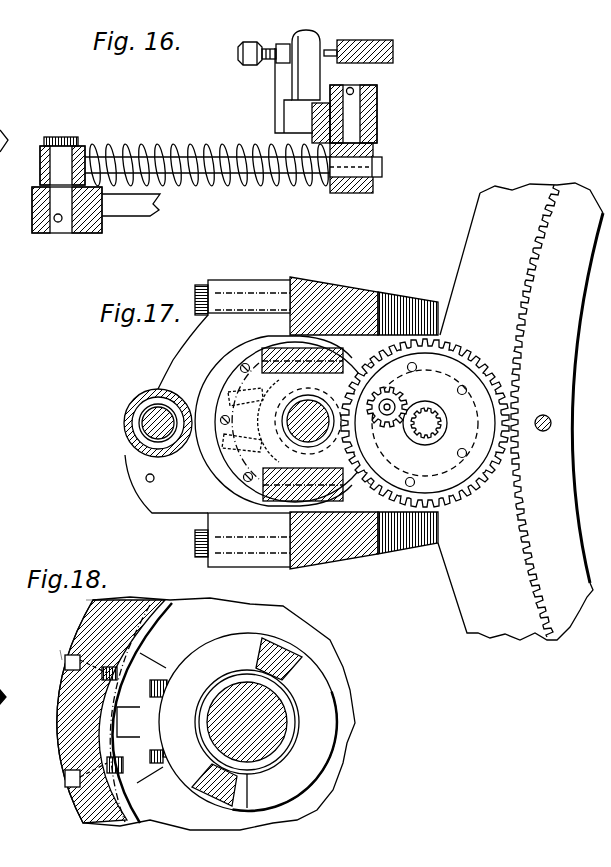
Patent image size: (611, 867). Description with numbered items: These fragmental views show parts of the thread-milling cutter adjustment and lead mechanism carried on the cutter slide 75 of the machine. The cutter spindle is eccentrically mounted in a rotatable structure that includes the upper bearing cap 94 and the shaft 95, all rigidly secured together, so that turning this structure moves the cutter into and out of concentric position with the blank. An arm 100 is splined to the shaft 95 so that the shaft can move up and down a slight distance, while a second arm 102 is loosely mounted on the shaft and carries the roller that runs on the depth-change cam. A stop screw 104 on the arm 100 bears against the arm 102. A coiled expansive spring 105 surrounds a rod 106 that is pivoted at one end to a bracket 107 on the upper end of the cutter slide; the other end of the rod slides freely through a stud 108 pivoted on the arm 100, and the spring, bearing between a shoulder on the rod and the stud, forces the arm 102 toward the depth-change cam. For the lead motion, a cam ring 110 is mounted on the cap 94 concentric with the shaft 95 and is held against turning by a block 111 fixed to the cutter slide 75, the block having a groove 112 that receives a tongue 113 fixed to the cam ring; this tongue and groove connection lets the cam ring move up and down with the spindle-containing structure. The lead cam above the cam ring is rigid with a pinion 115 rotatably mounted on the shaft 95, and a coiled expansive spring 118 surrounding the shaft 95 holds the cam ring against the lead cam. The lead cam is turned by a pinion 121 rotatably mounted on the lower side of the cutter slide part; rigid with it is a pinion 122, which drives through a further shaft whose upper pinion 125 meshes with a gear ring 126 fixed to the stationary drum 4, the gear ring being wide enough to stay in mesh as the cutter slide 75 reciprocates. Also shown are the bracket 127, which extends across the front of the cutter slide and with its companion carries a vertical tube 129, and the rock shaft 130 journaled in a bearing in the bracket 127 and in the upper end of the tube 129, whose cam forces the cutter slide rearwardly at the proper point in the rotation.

In FIG. 17, the circular frame member or drum 4 is at (519, 411).
In FIG. 18, the cutter slide 75 is at (63, 737).
In FIG. 18, the upper bearing cap 94 is at (337, 647).
In FIG. 17, the shaft 95 is at (294, 438).
In FIG. 18, the shaft 95 is at (230, 683).
In FIG. 16, the arm 100 is at (378, 122).
In FIG. 16, the arm 102 is at (395, 53).
In FIG. 16, the stop screw 104 is at (332, 46).
In FIG. 16, the coiled expansive spring 105 is at (212, 133).
In FIG. 16, the rod 106 is at (383, 166).
In FIG. 16, the bracket 107 is at (100, 216).
In FIG. 16, the stud 108 is at (357, 190).
In FIG. 18, the cam ring 110 is at (320, 707).
In FIG. 18, the block 111 is at (138, 777).
In FIG. 18, the groove 112 is at (110, 718).
In FIG. 18, the tongue 113 is at (88, 747).
In FIG. 17, the pinion 115 is at (402, 437).
In FIG. 17, the coiled expansive spring 118 is at (300, 407).
In FIG. 17, the pinion 121 is at (433, 352).
In FIG. 17, the pinion 122 is at (448, 340).
In FIG. 17, the pinion 125 is at (452, 505).
In FIG. 17, the gear ring 126 is at (524, 301).
In FIG. 17, the bracket 127 is at (180, 360).
In FIG. 17, the vertical tube 129 is at (138, 447).
In FIG. 17, the rock shaft 130 is at (130, 418).